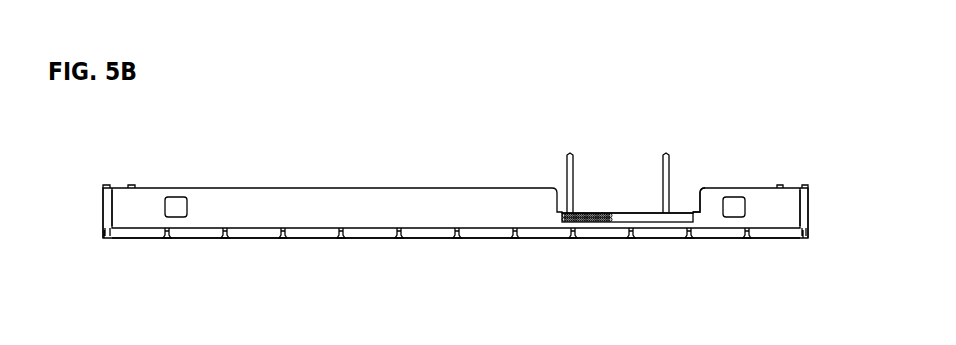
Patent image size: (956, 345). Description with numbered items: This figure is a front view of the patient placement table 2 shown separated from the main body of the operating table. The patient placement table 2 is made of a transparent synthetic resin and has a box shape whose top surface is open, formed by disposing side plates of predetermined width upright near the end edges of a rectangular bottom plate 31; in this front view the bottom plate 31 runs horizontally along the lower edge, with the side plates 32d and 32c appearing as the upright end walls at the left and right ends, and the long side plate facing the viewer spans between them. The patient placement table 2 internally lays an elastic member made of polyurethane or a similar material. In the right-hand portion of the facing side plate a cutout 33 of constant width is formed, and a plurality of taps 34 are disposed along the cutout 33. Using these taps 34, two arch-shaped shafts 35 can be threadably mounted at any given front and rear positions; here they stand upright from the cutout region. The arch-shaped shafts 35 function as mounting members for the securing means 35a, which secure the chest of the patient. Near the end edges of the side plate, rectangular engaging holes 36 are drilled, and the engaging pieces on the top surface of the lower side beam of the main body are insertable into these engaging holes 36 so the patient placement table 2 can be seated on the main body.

The patient placement table 2 is at (773, 98).
The bottom plate 31 is at (363, 239).
The side plate 32c is at (808, 205).
The side plate 32d is at (102, 208).
The cutout 33 is at (696, 193).
The tap 34 is at (600, 212).
The arch-shaped shaft 35 is at (570, 153).
The securing means 35a is at (666, 153).
The engaging hole 36 is at (173, 200).